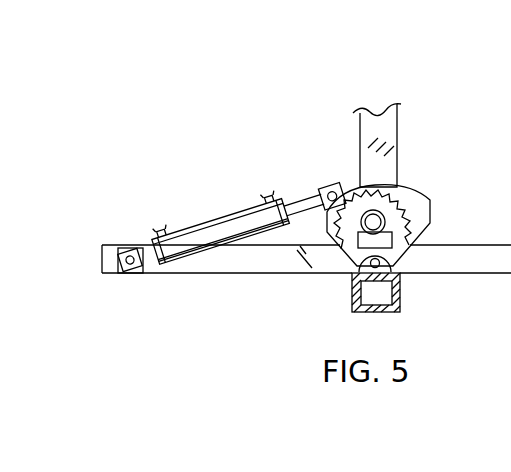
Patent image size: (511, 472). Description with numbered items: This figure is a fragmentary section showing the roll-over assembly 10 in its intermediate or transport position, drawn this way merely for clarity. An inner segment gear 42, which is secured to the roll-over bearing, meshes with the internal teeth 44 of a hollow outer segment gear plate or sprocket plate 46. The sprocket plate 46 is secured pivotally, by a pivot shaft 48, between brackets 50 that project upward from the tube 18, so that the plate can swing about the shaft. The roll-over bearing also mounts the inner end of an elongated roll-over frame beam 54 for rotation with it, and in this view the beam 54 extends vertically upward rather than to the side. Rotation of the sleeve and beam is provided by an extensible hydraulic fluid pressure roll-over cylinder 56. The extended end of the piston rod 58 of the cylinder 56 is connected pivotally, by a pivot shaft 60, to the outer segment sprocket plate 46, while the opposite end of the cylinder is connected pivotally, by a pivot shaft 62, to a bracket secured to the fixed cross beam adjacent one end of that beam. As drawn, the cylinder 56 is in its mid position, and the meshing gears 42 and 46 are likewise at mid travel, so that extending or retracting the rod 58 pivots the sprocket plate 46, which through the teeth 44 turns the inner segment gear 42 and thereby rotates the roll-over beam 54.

The nozzle assembly 10 is at (406, 225).
The tube 18 is at (353, 297).
The inner segment gear 42 is at (406, 200).
The internal teeth 44 is at (398, 212).
The outer segment gear plate or sprocket plate 46 is at (421, 234).
The pivot shaft 48 is at (382, 264).
The brackets 50 is at (336, 271).
The roll-over frame beam 54 is at (378, 108).
The roll-over cylinder 56 is at (233, 222).
The piston rod 58 is at (303, 198).
The pivot shaft 60 is at (332, 186).
The pivot shaft 62 is at (128, 256).